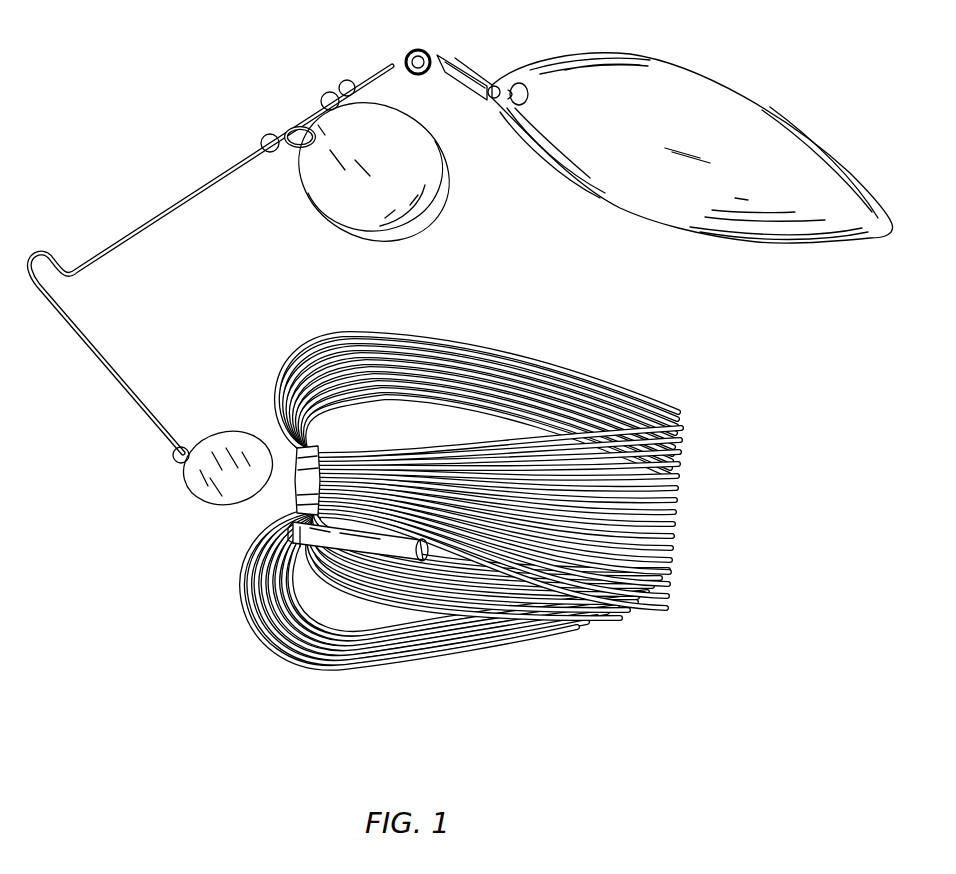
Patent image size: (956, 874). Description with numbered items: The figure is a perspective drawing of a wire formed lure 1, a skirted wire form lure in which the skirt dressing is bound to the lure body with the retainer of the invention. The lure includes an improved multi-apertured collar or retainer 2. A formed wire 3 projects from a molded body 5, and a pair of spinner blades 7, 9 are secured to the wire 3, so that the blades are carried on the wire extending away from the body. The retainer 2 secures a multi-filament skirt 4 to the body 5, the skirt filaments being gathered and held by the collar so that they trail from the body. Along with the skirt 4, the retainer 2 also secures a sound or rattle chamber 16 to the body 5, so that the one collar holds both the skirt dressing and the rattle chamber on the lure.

The wire formed lure 1 is at (223, 382).
The multi-apertured collar or retainer 2 is at (297, 483).
The formed wire 3 is at (160, 222).
The multi-filament skirt 4 is at (572, 374).
The molded body 5 is at (180, 460).
The spinner blade 7 is at (430, 217).
The spinner blade 9 is at (820, 240).
The sound or rattle chamber 16 is at (313, 540).